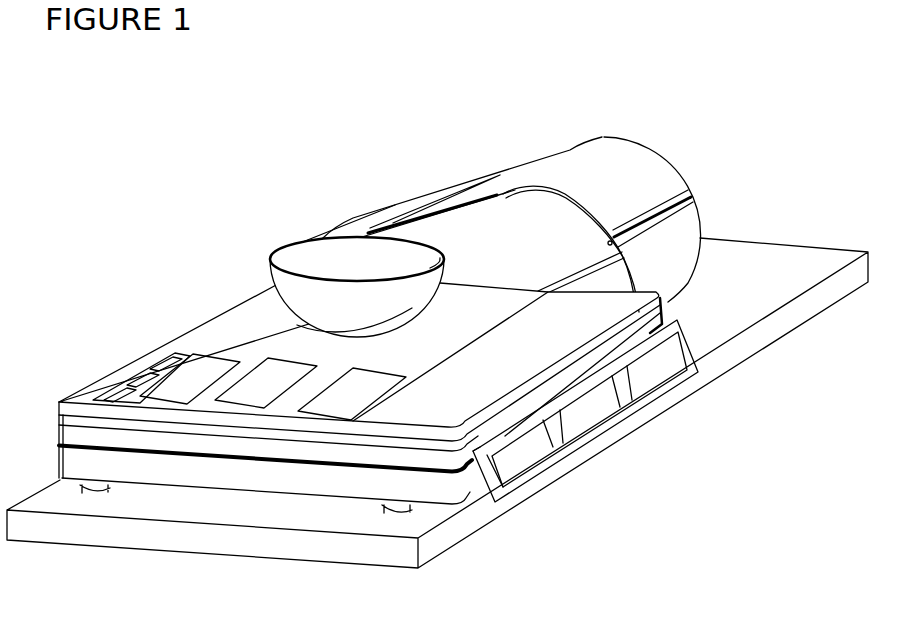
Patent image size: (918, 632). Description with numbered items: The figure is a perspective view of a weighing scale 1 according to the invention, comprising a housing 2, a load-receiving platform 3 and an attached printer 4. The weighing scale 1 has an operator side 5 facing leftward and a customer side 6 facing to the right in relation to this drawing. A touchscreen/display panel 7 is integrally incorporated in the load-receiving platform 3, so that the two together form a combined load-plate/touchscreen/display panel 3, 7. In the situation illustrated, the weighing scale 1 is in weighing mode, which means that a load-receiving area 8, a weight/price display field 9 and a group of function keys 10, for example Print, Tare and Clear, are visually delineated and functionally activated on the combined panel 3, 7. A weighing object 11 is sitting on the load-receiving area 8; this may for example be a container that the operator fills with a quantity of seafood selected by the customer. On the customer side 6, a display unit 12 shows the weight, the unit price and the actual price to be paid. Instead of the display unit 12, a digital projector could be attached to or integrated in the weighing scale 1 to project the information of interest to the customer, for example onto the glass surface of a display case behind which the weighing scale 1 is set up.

The weighing scale 1 is at (180, 208).
The housing 2 is at (377, 485).
The load-receiving platform 3 is at (633, 320).
The printer 4 is at (544, 162).
The operator side 5 is at (103, 352).
The customer side 6 is at (656, 433).
The touchscreen/display panel 7 is at (212, 388).
The load-receiving area 8 is at (422, 348).
The weight/price display field 9 is at (342, 362).
The group of function keys 10 is at (167, 357).
The weighing object 11 is at (318, 248).
The display unit 12 is at (578, 422).